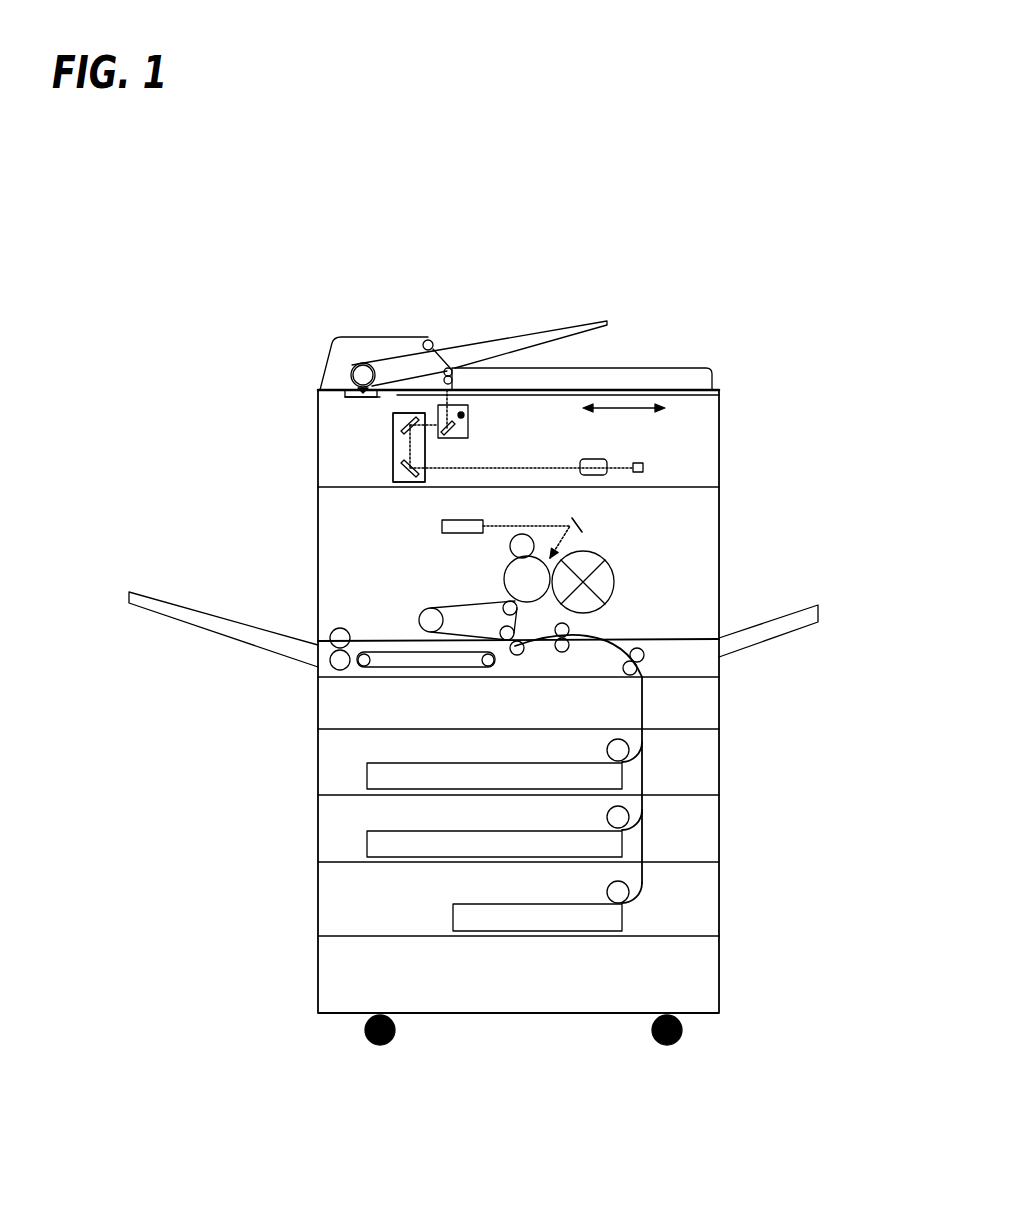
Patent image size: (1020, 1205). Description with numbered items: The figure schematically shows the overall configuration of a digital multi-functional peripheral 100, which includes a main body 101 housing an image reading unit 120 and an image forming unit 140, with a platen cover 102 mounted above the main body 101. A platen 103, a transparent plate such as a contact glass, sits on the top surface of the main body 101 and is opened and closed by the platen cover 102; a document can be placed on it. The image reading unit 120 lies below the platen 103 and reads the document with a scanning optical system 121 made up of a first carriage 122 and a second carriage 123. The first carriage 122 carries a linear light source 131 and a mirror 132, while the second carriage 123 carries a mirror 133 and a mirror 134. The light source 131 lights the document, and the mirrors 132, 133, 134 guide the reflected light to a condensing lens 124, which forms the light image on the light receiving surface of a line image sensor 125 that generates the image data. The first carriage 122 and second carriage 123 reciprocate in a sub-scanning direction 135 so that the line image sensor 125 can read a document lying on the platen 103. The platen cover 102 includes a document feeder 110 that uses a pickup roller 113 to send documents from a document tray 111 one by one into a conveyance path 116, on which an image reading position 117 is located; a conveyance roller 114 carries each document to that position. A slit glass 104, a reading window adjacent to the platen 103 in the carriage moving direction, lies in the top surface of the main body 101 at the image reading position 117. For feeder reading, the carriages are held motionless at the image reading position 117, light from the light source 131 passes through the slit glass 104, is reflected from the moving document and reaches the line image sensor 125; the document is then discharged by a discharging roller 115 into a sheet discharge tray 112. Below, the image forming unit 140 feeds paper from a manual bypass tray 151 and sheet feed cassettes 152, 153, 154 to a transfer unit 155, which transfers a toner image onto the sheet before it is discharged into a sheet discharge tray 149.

The multi-functional peripheral 100 is at (710, 268).
The main body 101 is at (298, 497).
The platen cover 102 is at (298, 342).
The platen 103 is at (640, 388).
The slit glass 104 is at (360, 398).
The document feeder 110 is at (387, 337).
The document tray 111 is at (497, 338).
The sheet discharge tray 112 is at (622, 368).
The pickup roller 113 is at (432, 340).
The conveyance roller 114 is at (352, 377).
The discharging roller 115 is at (453, 368).
The conveyance path 116 is at (365, 364).
The image reading position 117 is at (350, 392).
The image reading unit 120 is at (719, 455).
The scanning optical system 121 is at (700, 422).
The first carriage 122 is at (455, 438).
The second carriage 123 is at (393, 444).
The condensing lens 124 is at (605, 457).
The line image sensor 125 is at (645, 465).
The linear light source 131 is at (466, 415).
The mirror 132 is at (466, 434).
The mirror 133 is at (398, 420).
The mirror 134 is at (400, 482).
The sub-scanning direction 135 is at (624, 419).
The image forming unit 140 is at (719, 500).
The sheet discharge tray 149 is at (150, 600).
The manual bypass tray 151 is at (760, 637).
The sheet feed cassette 152 is at (374, 773).
The sheet feed cassette 153 is at (374, 840).
The sheet feed cassette 154 is at (457, 915).
The transfer unit 155 is at (513, 647).